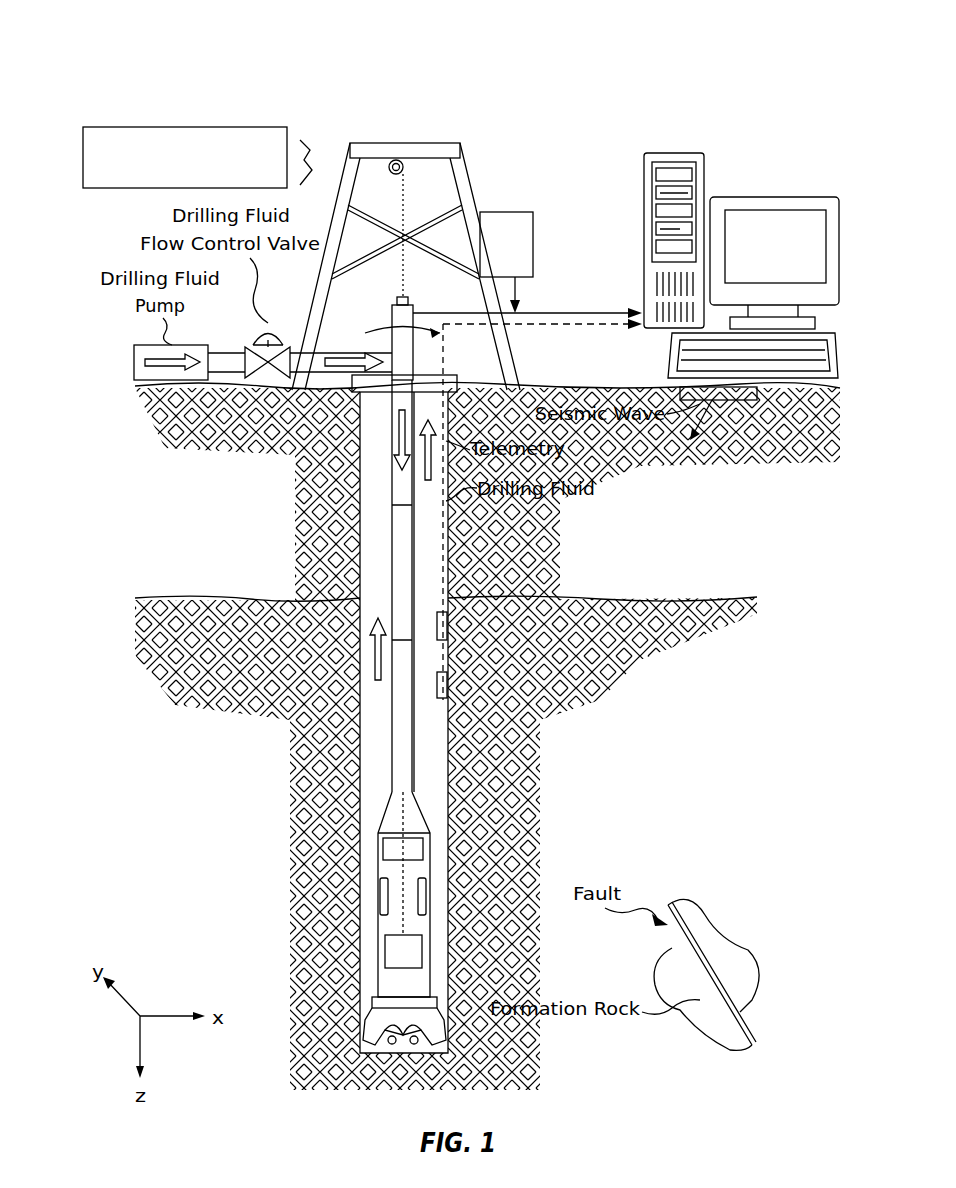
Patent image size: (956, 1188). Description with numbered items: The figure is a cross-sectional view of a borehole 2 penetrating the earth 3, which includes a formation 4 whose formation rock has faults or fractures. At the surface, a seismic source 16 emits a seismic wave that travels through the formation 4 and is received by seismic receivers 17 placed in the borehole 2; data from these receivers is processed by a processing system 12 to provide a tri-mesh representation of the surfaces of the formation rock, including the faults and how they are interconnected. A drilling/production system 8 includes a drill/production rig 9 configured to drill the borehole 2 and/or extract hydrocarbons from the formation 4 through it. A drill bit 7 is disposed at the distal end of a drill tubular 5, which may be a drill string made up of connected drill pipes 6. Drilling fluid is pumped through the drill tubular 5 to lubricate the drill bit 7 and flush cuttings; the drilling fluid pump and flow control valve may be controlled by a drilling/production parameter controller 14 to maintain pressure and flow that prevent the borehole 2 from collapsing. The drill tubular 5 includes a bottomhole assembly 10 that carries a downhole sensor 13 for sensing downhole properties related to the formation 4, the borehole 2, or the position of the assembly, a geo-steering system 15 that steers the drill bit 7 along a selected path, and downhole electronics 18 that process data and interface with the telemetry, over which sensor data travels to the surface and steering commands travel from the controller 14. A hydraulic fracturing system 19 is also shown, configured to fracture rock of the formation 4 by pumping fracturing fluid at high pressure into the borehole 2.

The borehole 2 is at (378, 522).
The earth 3 is at (185, 444).
The formation 4 is at (261, 636).
The drill tubular 5 is at (362, 598).
The drill pipe 6 is at (392, 478).
The drill bit 7 is at (372, 1020).
The drilling/production system 8 is at (740, 195).
The drill/production rig 9 is at (352, 144).
The bottomhole assembly (BHA) 10 is at (396, 918).
The processing system 12 is at (675, 212).
The downhole sensor 13 is at (398, 948).
The drilling/production parameter controller 14 is at (500, 212).
The geo-steering system 15 is at (385, 891).
The seismic source 16 is at (727, 400).
The seismic receiver 17 is at (447, 625).
The downhole electronics 18 is at (407, 849).
The hydraulic fracturing system 19 is at (235, 182).